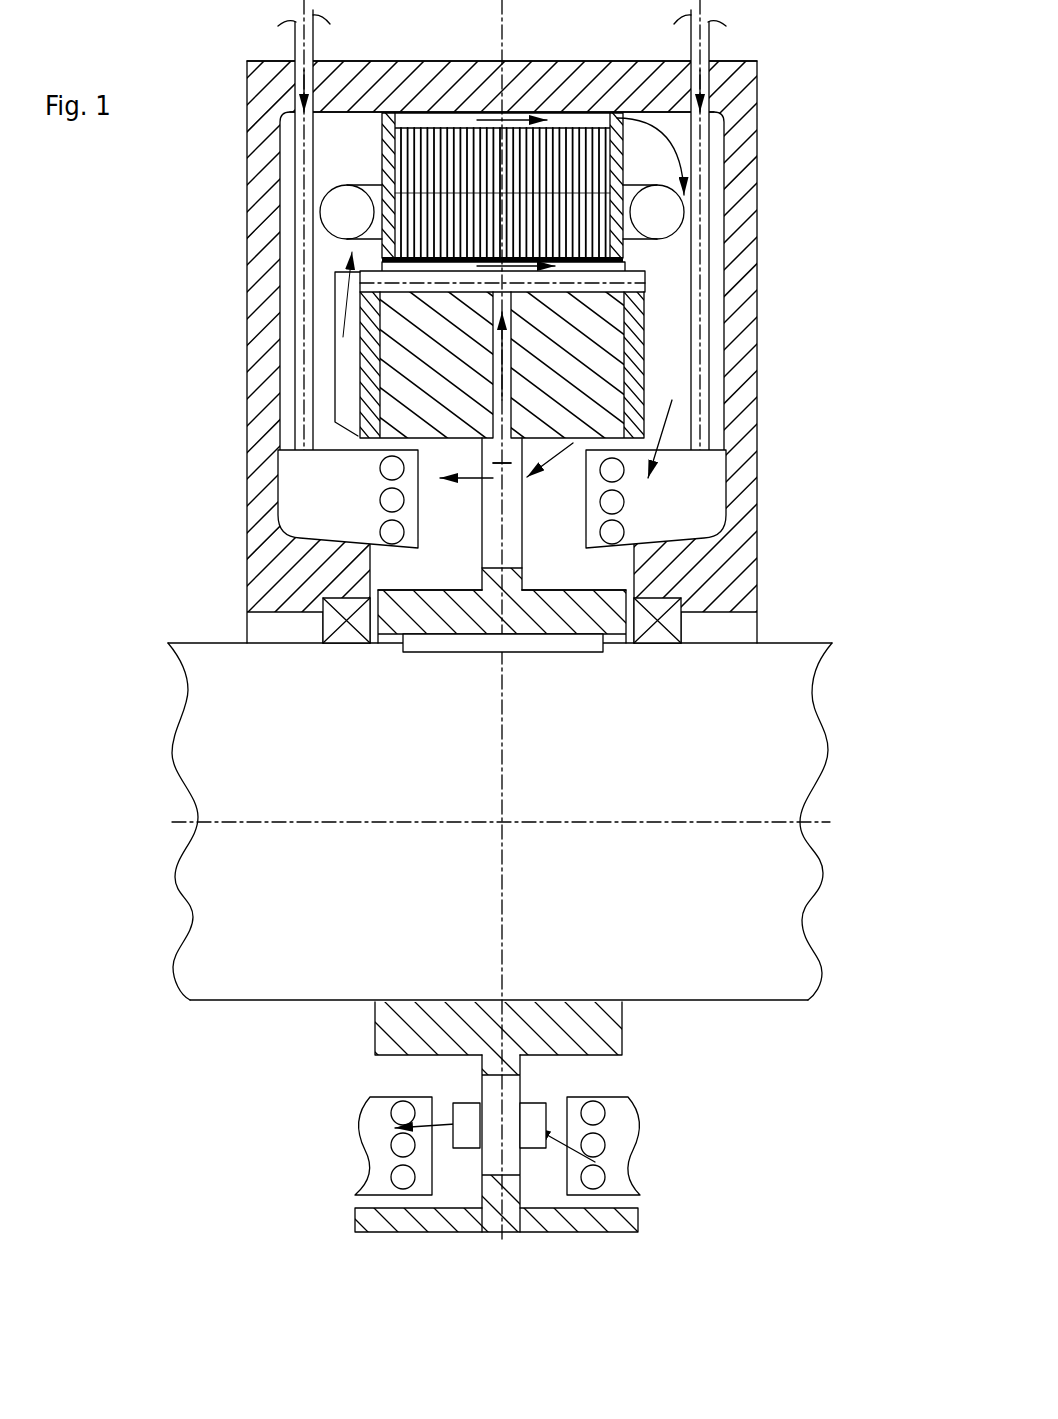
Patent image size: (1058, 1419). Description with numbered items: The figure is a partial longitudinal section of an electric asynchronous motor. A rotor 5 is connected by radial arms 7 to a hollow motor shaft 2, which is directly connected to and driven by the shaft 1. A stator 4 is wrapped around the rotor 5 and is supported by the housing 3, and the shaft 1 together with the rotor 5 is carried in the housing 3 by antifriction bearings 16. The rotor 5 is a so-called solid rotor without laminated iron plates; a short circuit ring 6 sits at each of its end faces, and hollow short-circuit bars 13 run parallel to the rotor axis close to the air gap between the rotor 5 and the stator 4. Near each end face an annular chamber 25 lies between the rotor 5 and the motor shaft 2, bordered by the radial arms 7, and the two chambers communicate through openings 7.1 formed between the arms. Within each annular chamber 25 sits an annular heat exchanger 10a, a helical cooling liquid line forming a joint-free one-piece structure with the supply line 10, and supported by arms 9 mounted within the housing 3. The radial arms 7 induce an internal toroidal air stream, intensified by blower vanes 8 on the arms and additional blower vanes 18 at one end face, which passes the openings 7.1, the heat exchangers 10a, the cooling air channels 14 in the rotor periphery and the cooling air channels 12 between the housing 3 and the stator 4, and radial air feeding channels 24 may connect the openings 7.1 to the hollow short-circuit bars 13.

The shaft 1 is at (770, 912).
The hollow motor shaft 2 is at (597, 622).
The housing 3 is at (532, 83).
The stator 4 is at (413, 160).
The rotor 5 is at (602, 368).
The short circuit ring 6 is at (372, 365).
The radial arms 7 is at (488, 563).
The openings 7.1 is at (520, 563).
The blower vanes 8 is at (528, 1142).
The arms 9 is at (708, 477).
The supply line 10 is at (297, 45).
The annular heat exchanger 10a is at (381, 535).
The cooling air channels 12 is at (588, 125).
The hollow short-circuit bars 13 is at (643, 285).
The cooling air channels 14 is at (479, 270).
The antifriction bearings 16 is at (357, 620).
The additional blower vanes 18 is at (350, 410).
The radial air feeding channels 24 is at (496, 466).
The annular chamber 25 is at (470, 550).